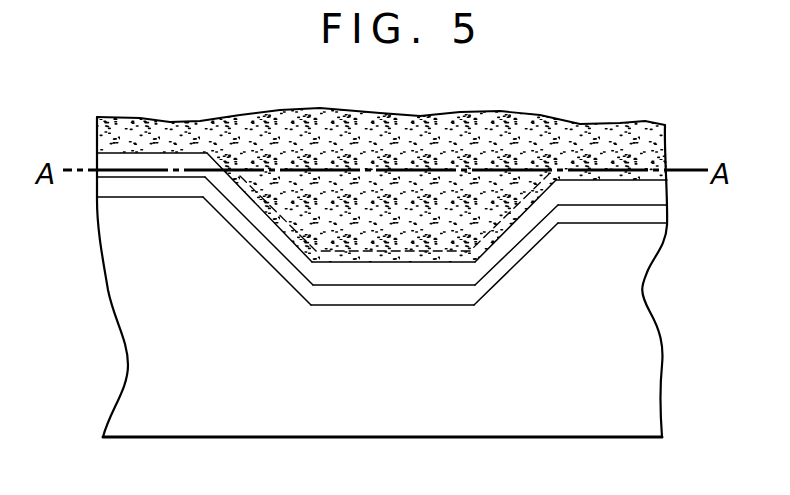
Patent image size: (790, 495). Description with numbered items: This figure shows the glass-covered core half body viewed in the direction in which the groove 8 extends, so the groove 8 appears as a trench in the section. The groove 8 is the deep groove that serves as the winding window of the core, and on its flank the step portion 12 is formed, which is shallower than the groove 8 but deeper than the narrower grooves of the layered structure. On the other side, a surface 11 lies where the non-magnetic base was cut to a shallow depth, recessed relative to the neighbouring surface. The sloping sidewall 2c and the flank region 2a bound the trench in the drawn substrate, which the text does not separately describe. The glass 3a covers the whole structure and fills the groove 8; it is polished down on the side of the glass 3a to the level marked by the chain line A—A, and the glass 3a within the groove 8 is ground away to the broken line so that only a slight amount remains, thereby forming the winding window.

The glass portion 3a is at (538, 130).
The substrate 2a is at (638, 213).
The groove sidewall 2c is at (282, 245).
The surface 11 is at (149, 197).
The step portion 12 is at (572, 223).
The groove 8 is at (396, 313).